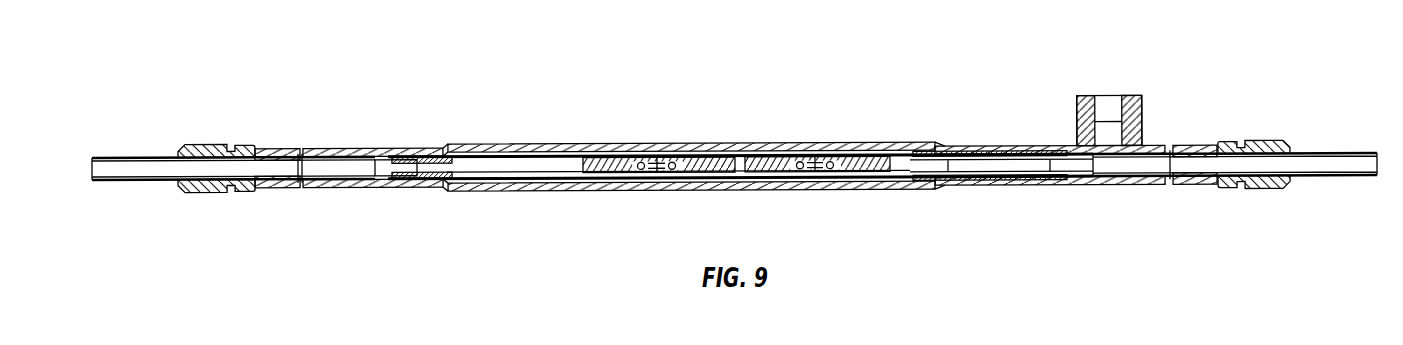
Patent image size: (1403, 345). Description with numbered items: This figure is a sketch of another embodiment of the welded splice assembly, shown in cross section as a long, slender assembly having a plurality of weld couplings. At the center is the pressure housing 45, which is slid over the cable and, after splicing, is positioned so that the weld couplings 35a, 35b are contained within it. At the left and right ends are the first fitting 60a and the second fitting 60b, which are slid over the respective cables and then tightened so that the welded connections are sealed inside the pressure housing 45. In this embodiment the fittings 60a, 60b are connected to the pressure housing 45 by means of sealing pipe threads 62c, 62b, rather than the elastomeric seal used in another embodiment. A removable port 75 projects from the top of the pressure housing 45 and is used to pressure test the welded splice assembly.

The first fitting 60a is at (245, 149).
The sealing pipe thread 62c is at (267, 153).
The pressure housing 45 is at (660, 148).
The weld coupling 35a is at (887, 152).
The weld coupling 35b is at (1045, 145).
The removable port 75 is at (1108, 97).
The sealing pipe thread 62b is at (1193, 147).
The second fitting 60b is at (1237, 142).